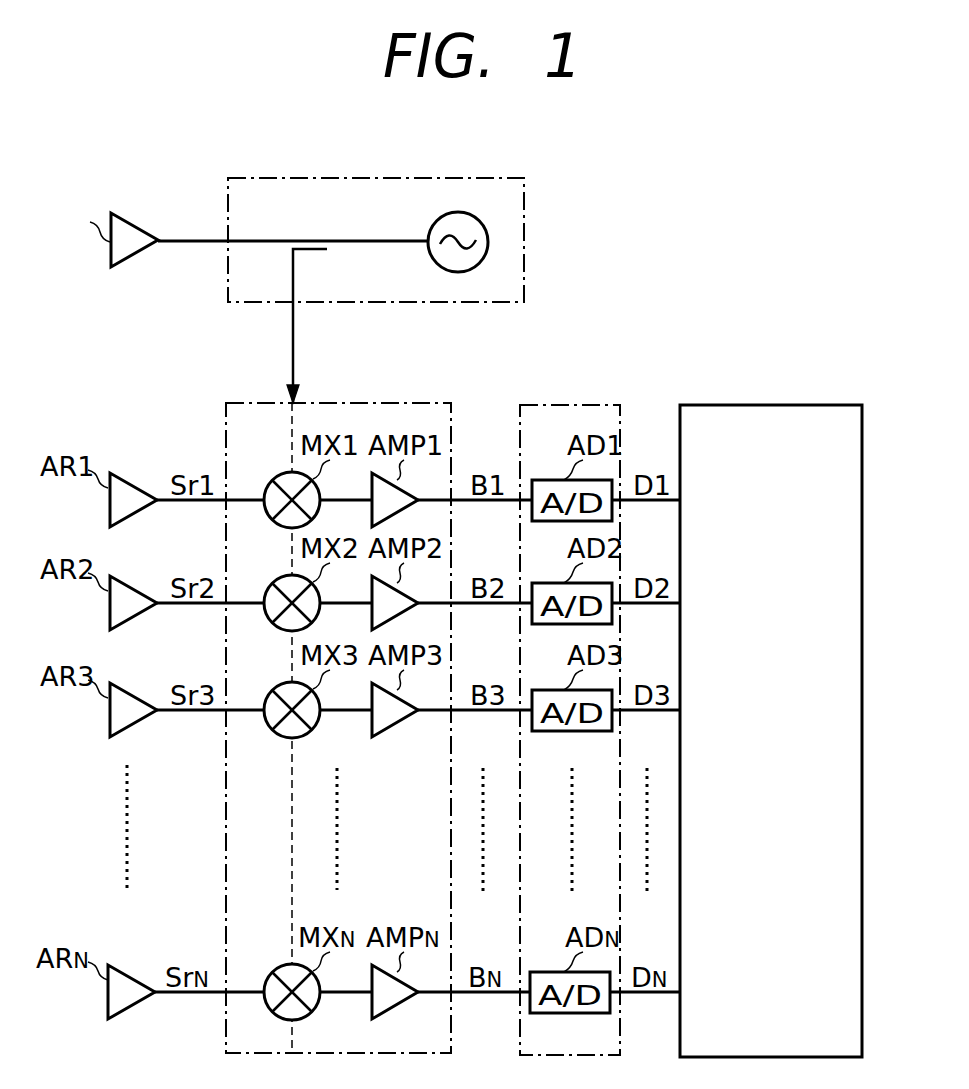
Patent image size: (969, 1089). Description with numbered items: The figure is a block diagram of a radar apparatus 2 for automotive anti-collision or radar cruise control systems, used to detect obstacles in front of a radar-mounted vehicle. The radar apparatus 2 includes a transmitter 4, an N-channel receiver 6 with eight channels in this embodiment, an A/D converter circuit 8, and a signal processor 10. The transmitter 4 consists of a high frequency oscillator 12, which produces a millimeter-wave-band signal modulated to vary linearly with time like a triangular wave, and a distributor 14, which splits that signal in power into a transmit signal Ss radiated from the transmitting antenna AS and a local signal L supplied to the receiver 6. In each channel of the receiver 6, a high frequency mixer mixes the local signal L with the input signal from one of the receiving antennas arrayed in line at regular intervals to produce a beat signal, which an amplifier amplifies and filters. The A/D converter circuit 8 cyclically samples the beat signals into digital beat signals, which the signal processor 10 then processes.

The radar apparatus 2 is at (662, 180).
The transmitter 4 is at (312, 283).
The N-channel receiver 6 is at (426, 403).
The A/D converter circuit 8 is at (597, 405).
The signal processor 10 is at (840, 405).
The high frequency oscillator 12 is at (430, 224).
The distributor 14 is at (318, 260).